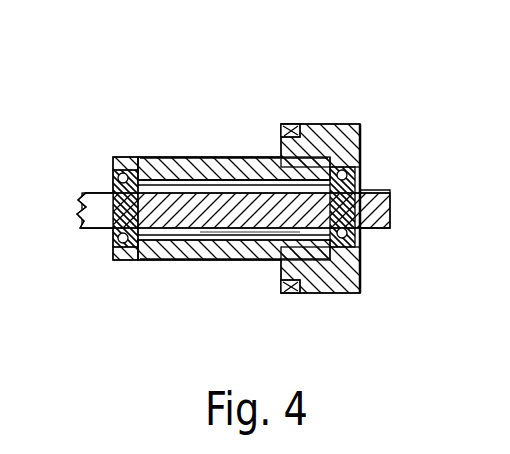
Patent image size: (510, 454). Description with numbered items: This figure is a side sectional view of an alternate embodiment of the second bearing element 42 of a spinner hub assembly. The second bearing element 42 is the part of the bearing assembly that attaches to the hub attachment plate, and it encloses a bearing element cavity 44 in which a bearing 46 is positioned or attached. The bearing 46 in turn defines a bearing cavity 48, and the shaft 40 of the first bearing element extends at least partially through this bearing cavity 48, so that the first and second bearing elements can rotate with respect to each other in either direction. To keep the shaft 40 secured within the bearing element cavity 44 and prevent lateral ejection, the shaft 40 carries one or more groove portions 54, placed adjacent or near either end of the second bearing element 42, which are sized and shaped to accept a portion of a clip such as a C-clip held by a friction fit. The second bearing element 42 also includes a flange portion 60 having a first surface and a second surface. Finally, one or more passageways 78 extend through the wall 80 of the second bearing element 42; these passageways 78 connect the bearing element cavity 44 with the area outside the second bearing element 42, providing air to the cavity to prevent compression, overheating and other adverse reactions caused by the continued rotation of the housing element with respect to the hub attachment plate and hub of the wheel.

The shaft 40 is at (163, 213).
The second bearing element 42 is at (263, 117).
The bearing element cavity 44 is at (197, 167).
The bearing 46 is at (378, 209).
The bearing cavity 48 is at (243, 233).
The groove portions 54 is at (118, 188).
The flange portion 60 is at (294, 131).
The passageways 78 is at (206, 170).
The wall 80 is at (176, 180).